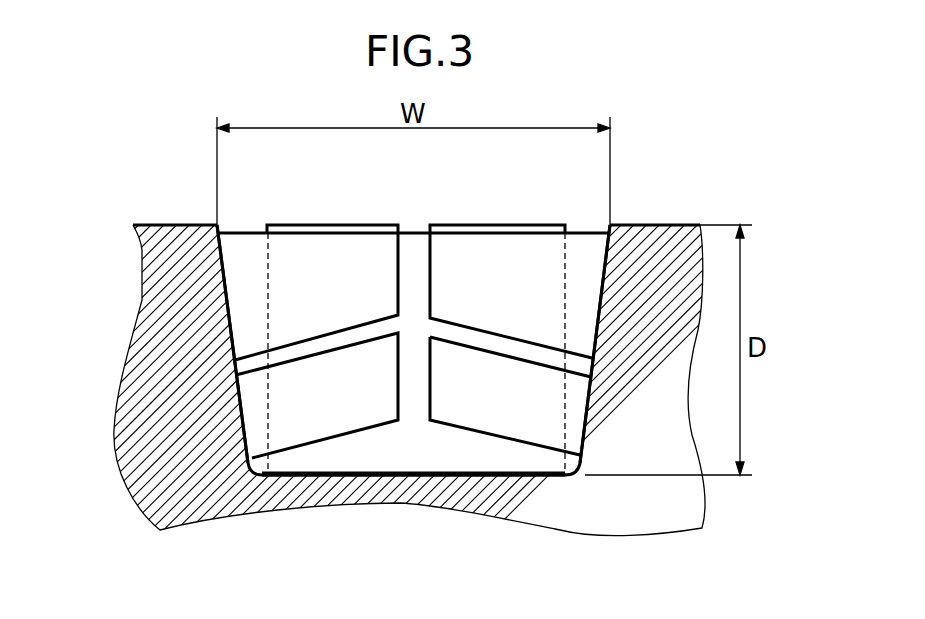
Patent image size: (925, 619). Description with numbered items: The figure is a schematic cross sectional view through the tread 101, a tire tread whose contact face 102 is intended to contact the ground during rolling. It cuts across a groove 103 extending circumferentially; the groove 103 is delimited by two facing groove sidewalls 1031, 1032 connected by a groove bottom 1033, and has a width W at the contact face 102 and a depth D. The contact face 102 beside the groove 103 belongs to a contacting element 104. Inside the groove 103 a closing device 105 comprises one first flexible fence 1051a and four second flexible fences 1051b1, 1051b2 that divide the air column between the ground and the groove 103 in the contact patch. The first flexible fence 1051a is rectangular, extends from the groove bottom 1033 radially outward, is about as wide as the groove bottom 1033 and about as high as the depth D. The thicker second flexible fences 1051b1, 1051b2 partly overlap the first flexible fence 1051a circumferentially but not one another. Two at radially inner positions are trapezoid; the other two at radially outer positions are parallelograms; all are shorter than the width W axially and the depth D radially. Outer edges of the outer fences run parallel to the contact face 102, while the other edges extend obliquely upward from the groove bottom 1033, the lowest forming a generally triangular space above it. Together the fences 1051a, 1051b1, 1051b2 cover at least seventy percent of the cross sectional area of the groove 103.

The tread 101 is at (652, 112).
The contact face 102 is at (180, 225).
The groove 103 is at (238, 228).
The contacting element 104 is at (153, 225).
The closing device 105 is at (439, 212).
The groove sidewall 1031 is at (243, 399).
The groove sidewall 1032 is at (583, 398).
The groove bottom 1033 is at (335, 474).
The first flexible fence 1051a is at (455, 458).
The second flexible fence 1051b1 is at (543, 250).
The second flexible fence 1051b2 is at (313, 253).